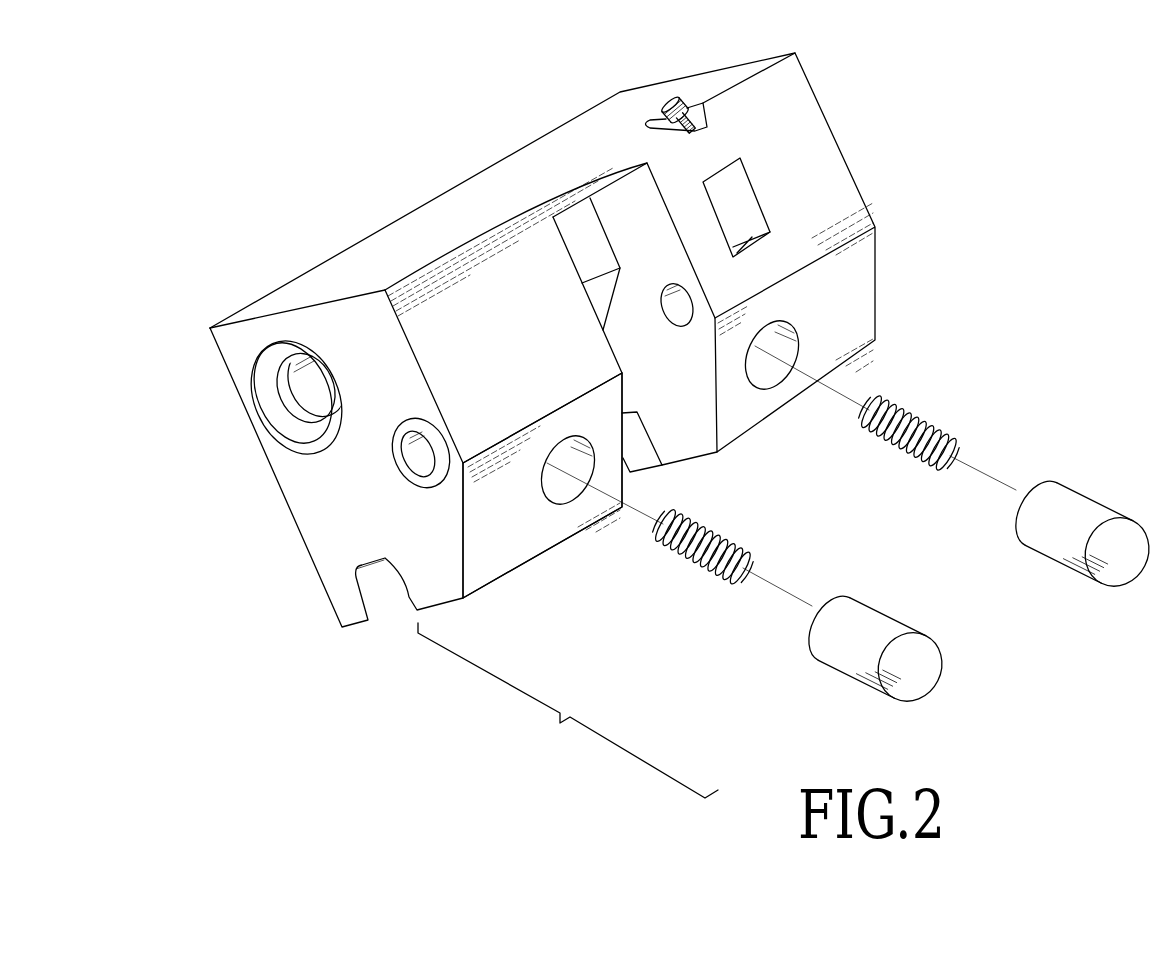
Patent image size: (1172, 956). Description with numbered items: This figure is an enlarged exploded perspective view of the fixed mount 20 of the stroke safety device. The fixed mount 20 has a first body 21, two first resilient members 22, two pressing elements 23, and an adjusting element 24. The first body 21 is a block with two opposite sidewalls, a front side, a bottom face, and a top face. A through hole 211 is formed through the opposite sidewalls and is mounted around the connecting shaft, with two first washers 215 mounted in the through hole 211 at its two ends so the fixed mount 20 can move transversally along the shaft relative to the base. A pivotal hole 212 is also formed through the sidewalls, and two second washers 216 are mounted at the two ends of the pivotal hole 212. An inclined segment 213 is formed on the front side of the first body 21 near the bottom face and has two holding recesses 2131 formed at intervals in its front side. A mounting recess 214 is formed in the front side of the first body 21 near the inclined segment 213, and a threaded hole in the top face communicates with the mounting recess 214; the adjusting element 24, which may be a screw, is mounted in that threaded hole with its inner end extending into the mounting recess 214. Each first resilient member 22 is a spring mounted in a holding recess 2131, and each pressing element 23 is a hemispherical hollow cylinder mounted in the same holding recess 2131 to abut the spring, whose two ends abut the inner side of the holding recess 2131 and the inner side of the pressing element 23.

The fixed mount 20 is at (472, 202).
The first body 21 is at (385, 258).
The through hole 211 is at (310, 370).
The pivotal hole 212 is at (423, 460).
The inclined segment 213 is at (523, 548).
The holding recess 2131 is at (788, 338).
The mounting recess 214 is at (747, 203).
The first washer 215 is at (290, 418).
The second washer 216 is at (400, 448).
The first resilient member 22 is at (917, 413).
The pressing element 23 is at (1080, 498).
The adjusting element 24 is at (665, 104).